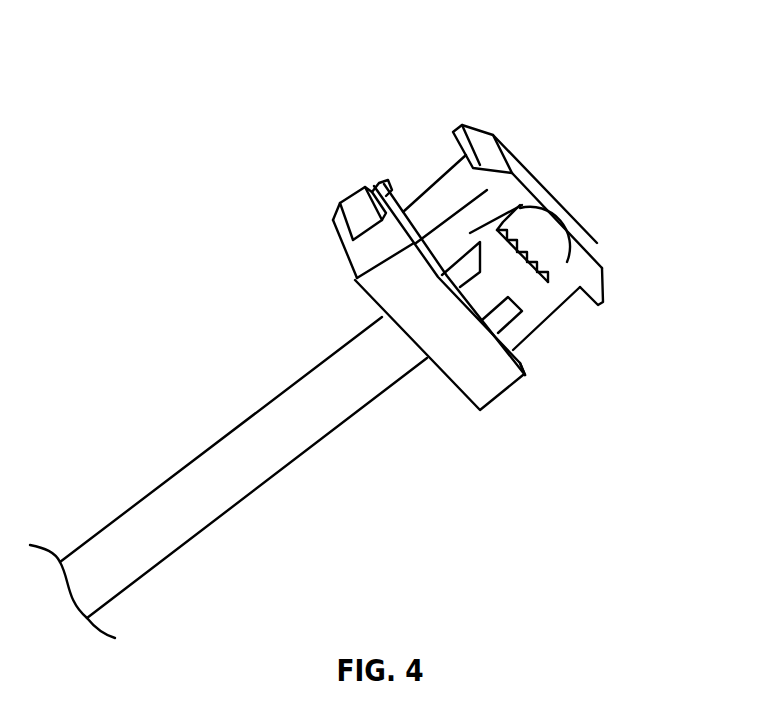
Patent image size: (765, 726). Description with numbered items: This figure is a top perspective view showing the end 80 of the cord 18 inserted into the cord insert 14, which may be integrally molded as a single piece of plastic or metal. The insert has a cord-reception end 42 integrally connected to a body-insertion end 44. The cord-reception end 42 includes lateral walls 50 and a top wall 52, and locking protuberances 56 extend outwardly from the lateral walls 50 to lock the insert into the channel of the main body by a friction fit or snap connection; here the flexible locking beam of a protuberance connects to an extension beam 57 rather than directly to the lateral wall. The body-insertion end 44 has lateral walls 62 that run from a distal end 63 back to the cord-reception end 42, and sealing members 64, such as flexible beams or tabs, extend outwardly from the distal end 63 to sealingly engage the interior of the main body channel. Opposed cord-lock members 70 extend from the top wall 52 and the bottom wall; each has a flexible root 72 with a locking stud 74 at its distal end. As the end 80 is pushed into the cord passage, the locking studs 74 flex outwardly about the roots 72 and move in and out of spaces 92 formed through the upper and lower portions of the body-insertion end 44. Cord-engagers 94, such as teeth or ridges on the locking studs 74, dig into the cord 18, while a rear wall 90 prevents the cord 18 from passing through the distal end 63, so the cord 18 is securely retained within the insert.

The cord insert 14 is at (580, 343).
The cord 18 is at (237, 480).
The cord-reception end 42 is at (460, 390).
The body-insertion end 44 is at (590, 183).
The lateral walls 50 is at (358, 250).
The top wall 52 is at (495, 388).
The locking protuberances 56 is at (358, 198).
The extension beam 57 is at (386, 193).
The lateral walls 62 is at (437, 193).
The distal end 63 is at (512, 160).
The sealing members 64 is at (463, 122).
The cord-lock members 70 is at (528, 333).
The flexible root 72 is at (480, 285).
The locking stud 74 is at (552, 262).
The end 80 is at (548, 205).
The rear wall 90 is at (515, 200).
The spaces 92 is at (568, 268).
The cord-engagers 94 is at (507, 208).